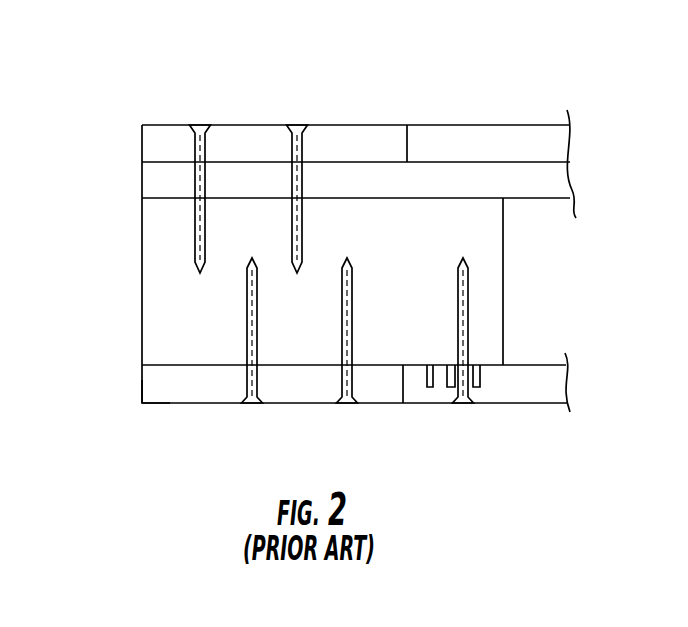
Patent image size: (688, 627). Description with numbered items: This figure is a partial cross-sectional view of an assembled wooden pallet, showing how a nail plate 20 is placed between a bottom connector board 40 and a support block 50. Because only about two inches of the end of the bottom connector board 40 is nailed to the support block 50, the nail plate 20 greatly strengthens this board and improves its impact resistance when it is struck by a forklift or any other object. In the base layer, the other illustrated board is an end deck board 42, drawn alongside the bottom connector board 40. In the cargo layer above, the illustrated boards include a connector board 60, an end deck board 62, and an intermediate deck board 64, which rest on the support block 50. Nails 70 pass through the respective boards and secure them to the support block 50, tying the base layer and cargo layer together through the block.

The nail plate 20 is at (483, 368).
The bottom connector board 40 is at (547, 377).
The end deck board 42 is at (160, 403).
The support block 50 is at (495, 265).
The connector board 60 is at (152, 173).
The end deck board 62 is at (392, 138).
The intermediate deck board 64 is at (470, 135).
The nails 70 is at (245, 297).